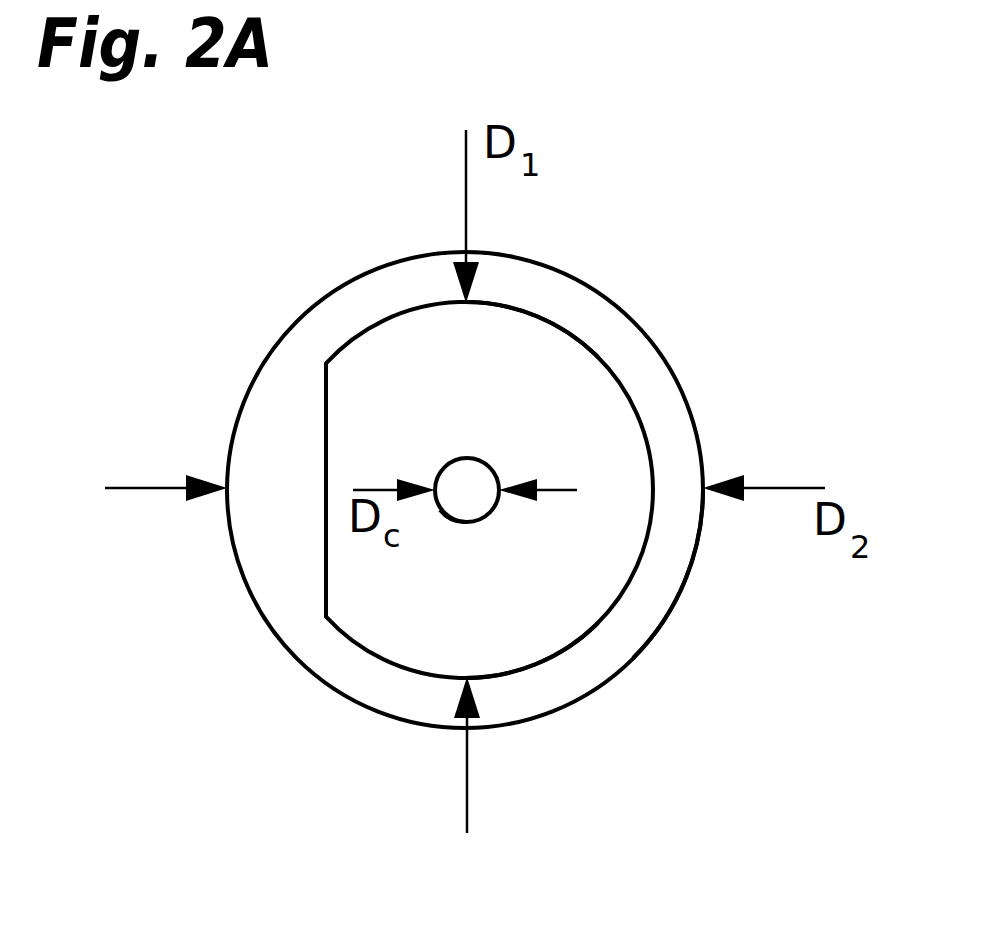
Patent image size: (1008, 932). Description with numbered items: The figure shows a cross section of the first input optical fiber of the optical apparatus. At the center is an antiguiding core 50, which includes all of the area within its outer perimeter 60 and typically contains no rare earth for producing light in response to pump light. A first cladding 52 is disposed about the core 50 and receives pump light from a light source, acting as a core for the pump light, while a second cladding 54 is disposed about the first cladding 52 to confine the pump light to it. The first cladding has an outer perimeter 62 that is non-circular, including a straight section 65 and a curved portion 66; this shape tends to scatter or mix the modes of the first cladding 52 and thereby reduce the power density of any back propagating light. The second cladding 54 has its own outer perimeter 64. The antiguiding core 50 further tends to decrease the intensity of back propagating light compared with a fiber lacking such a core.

The antiguiding core 50 is at (472, 495).
The first cladding 52 is at (545, 409).
The second cladding 54 is at (658, 402).
The outer perimeter of the antiguiding core 60 is at (450, 517).
The outer perimeter of the first cladding 62 is at (522, 313).
The outer perimeter of the second cladding 64 is at (678, 605).
The straight section 65 is at (326, 478).
The curved portion 66 is at (578, 640).